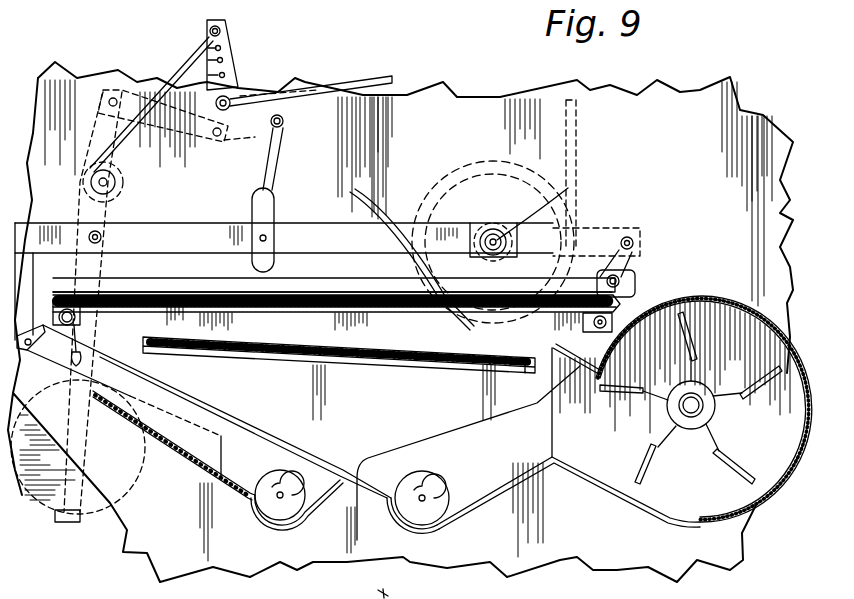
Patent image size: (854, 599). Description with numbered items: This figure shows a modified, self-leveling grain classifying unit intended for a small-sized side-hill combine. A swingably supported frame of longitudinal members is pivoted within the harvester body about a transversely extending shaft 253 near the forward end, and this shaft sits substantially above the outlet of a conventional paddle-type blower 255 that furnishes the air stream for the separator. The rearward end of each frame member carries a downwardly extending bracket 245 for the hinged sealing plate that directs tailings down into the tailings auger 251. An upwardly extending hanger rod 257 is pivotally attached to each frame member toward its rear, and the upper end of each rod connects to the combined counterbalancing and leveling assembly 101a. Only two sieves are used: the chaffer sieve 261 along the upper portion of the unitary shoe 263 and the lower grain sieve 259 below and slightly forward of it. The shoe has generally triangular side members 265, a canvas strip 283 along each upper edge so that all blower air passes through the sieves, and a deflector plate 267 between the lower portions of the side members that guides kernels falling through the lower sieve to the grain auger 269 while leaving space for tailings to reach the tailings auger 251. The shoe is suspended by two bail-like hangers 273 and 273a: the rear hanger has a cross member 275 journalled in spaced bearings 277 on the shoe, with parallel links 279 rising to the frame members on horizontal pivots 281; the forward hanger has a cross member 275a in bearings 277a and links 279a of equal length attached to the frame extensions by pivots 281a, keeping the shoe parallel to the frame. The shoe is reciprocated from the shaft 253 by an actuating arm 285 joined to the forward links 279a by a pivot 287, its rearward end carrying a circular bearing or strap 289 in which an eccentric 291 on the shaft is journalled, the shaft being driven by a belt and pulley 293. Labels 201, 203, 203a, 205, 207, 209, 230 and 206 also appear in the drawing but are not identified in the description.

The combined counterbalancing and leveling assembly 101a is at (277, 78).
The assembly 201 is at (167, 216).
The frame bar 203 is at (187, 233).
The frame bar extension 203a is at (600, 232).
The frame side member 205 is at (30, 286).
The chute plate 207 is at (137, 412).
The link 209 is at (29, 349).
The crank mechanism 230 is at (342, 193).
The downwardly extending bracket 245 is at (27, 268).
The tailings auger 251 is at (284, 515).
The transversely extending shaft 253 is at (566, 195).
The paddle-type blower 255 is at (684, 497).
The hanger rod 257 is at (282, 160).
The lower sieve 259 is at (358, 362).
The chaffer sieve 261 is at (398, 305).
The unitary shoe 263 is at (380, 420).
The side members 265 is at (209, 411).
The deflector plate 267 is at (298, 450).
The grain auger 269 is at (416, 521).
The bail-like hanger 273 is at (336, 287).
The bail-like hanger 273a is at (630, 275).
The cross member 275 is at (80, 317).
The cross member 275a is at (606, 313).
The bearings 277 is at (78, 330).
The bearings 277a is at (575, 318).
The parallel links 279 is at (97, 275).
The links 279a is at (622, 262).
The pivots 281 is at (101, 233).
The pivots 281a is at (634, 243).
The canvas strip 283 is at (355, 268).
The actuating arm 285 is at (545, 283).
The pivot 287 is at (622, 282).
The circular bearing or strap 289 is at (495, 236).
The eccentric 291 is at (578, 136).
The pulley 293 is at (462, 170).
The support 206 is at (388, 596).